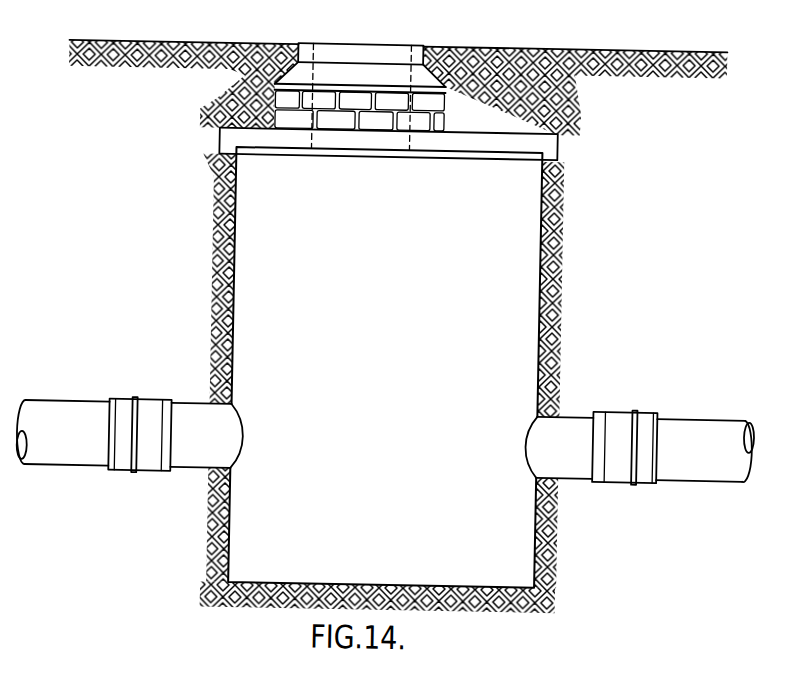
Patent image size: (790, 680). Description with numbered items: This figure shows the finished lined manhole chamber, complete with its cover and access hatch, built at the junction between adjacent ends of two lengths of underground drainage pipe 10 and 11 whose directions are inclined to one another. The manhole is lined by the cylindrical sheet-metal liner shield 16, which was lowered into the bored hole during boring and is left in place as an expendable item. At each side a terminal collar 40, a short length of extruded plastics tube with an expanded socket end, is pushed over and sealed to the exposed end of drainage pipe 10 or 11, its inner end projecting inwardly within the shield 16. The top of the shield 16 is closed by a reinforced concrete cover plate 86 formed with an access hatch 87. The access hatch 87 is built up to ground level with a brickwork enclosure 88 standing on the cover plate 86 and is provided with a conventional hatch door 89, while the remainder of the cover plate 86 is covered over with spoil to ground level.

The underground drainage pipe 10 is at (702, 431).
The underground drainage pipe 11 is at (77, 428).
The liner shield 16 is at (516, 295).
The terminal collar 40 is at (202, 427).
The cover plate 86 is at (484, 140).
The access hatch 87 is at (397, 150).
The brickwork enclosure 88 is at (420, 79).
The hatch door 89 is at (362, 48).